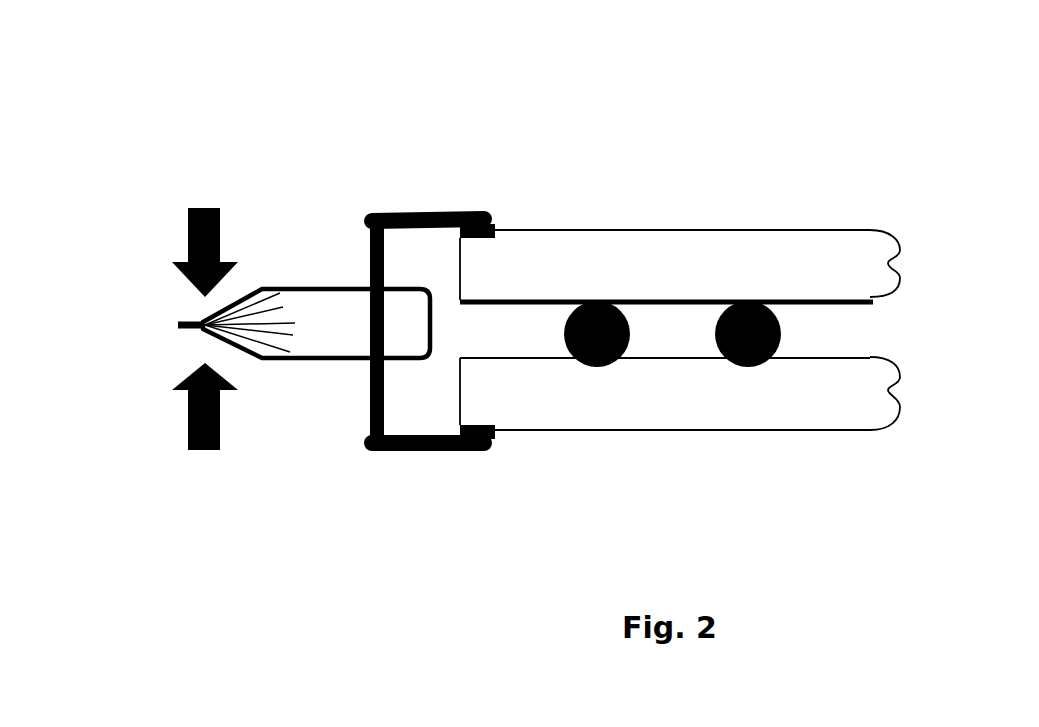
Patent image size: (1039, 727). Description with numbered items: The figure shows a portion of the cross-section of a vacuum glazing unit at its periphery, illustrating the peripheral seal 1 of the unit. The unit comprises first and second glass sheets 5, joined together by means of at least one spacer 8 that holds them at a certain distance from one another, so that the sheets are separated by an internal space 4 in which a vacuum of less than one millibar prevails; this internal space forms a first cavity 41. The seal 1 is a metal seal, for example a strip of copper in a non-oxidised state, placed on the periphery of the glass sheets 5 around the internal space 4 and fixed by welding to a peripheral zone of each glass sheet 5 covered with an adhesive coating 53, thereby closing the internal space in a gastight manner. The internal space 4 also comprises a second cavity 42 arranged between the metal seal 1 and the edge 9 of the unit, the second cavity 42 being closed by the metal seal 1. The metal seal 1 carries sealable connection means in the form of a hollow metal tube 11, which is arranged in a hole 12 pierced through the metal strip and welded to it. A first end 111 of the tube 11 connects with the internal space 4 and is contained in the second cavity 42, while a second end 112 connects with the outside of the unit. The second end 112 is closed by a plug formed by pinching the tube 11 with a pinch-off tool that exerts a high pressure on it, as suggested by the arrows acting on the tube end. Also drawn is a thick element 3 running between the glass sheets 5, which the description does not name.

The peripheral seal 1 is at (365, 420).
The rod 3 is at (872, 300).
The internal space 4 is at (848, 333).
The glass sheets 5 is at (908, 242).
The spacer 8 is at (780, 308).
The edge of the unit 9 is at (460, 268).
The hollow metal tube 11 is at (305, 280).
The hole 12 is at (365, 363).
The first cavity 41 is at (688, 333).
The second cavity 42 is at (423, 408).
The adhesive coating 53 is at (497, 232).
The first end of the tube 111 is at (397, 218).
The second end of the tube 112 is at (165, 317).